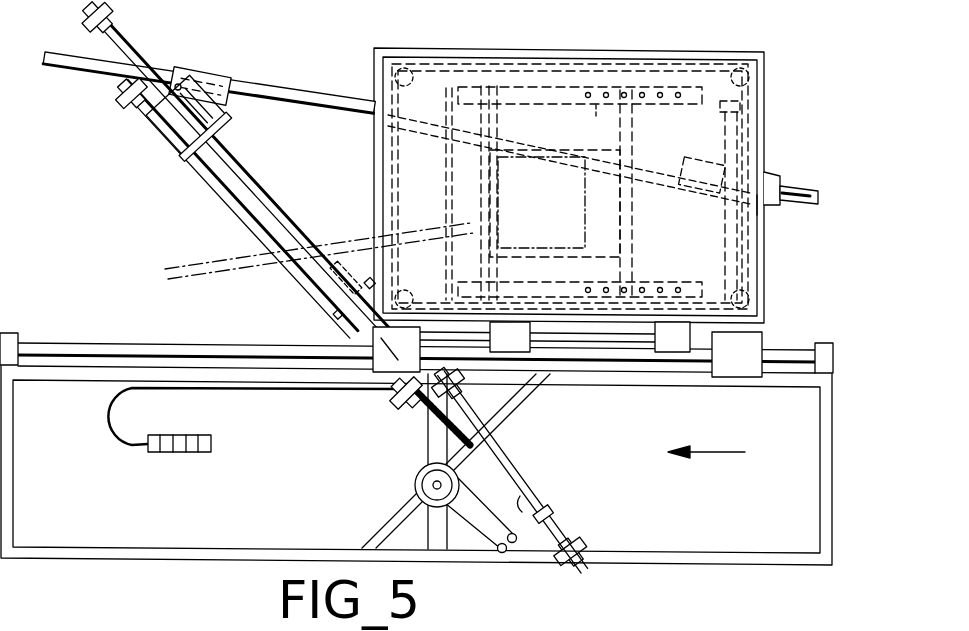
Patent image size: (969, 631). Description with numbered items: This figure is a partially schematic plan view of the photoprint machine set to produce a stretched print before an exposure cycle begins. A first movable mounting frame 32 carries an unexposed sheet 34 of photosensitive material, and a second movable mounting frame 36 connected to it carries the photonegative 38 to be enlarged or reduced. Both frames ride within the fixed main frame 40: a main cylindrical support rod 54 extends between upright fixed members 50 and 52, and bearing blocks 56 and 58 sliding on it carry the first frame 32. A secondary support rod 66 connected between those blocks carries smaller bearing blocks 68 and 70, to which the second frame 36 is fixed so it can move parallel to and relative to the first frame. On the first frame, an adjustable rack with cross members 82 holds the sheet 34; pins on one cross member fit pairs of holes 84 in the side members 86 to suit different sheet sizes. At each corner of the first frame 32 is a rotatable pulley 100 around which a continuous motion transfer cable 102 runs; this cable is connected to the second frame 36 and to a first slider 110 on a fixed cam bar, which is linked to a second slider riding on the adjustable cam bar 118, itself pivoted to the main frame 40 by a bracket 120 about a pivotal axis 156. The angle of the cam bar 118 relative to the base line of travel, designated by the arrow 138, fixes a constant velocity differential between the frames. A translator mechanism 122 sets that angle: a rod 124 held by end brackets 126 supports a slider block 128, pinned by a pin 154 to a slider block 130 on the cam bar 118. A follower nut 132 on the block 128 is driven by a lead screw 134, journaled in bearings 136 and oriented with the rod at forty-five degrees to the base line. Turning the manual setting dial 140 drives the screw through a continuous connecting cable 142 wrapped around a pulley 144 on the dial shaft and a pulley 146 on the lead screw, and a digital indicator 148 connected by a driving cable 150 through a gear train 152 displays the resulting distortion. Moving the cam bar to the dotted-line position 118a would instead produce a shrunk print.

The first movable mounting frame 32 is at (440, 48).
The unexposed sheet of photosensitive material 34 is at (522, 258).
The second movable mounting frame 36 is at (505, 56).
The photonegative 38 is at (568, 245).
The fixed main frame 40 is at (820, 453).
The upright fixed member 50 is at (15, 338).
The upright fixed member 52 is at (828, 342).
The main cylindrical support rod 54 is at (205, 344).
The bearing block 56 is at (383, 374).
The bearing block 58 is at (730, 369).
The secondary support rod 66 is at (630, 354).
The smaller bearing block 68 is at (522, 348).
The smaller bearing block 70 is at (672, 354).
The cross members 82 is at (632, 260).
The pairs of holes 84 is at (630, 103).
The side members 86 is at (588, 106).
The rotatable pulley 100 is at (402, 54).
The continuous motion transfer cable 102 is at (397, 158).
The first slider 110 is at (715, 208).
The adjustable cam bar 118 is at (298, 100).
The dotted-line position of adjustable cam bar 118a is at (163, 270).
The bracket 120 is at (776, 185).
The translator mechanism 122 is at (508, 456).
The rod 124 is at (272, 200).
The end brackets 126 is at (112, 15).
The slider block 128 is at (175, 118).
The slider block 130 is at (224, 72).
The follower nut 132 is at (179, 154).
The lead screw 134 is at (242, 221).
The bearings 136 is at (118, 100).
The arrow 138 is at (735, 452).
The manual setting dial 140 is at (420, 468).
The continuous connecting cable 142 is at (470, 538).
The pulley 144 is at (413, 487).
The pulley 146 is at (548, 515).
The digital indicator 148 is at (180, 452).
The driving cable 150 is at (236, 390).
The gear train 152 is at (406, 410).
The pin 154 is at (177, 82).
The pivotal axis 156 is at (761, 210).